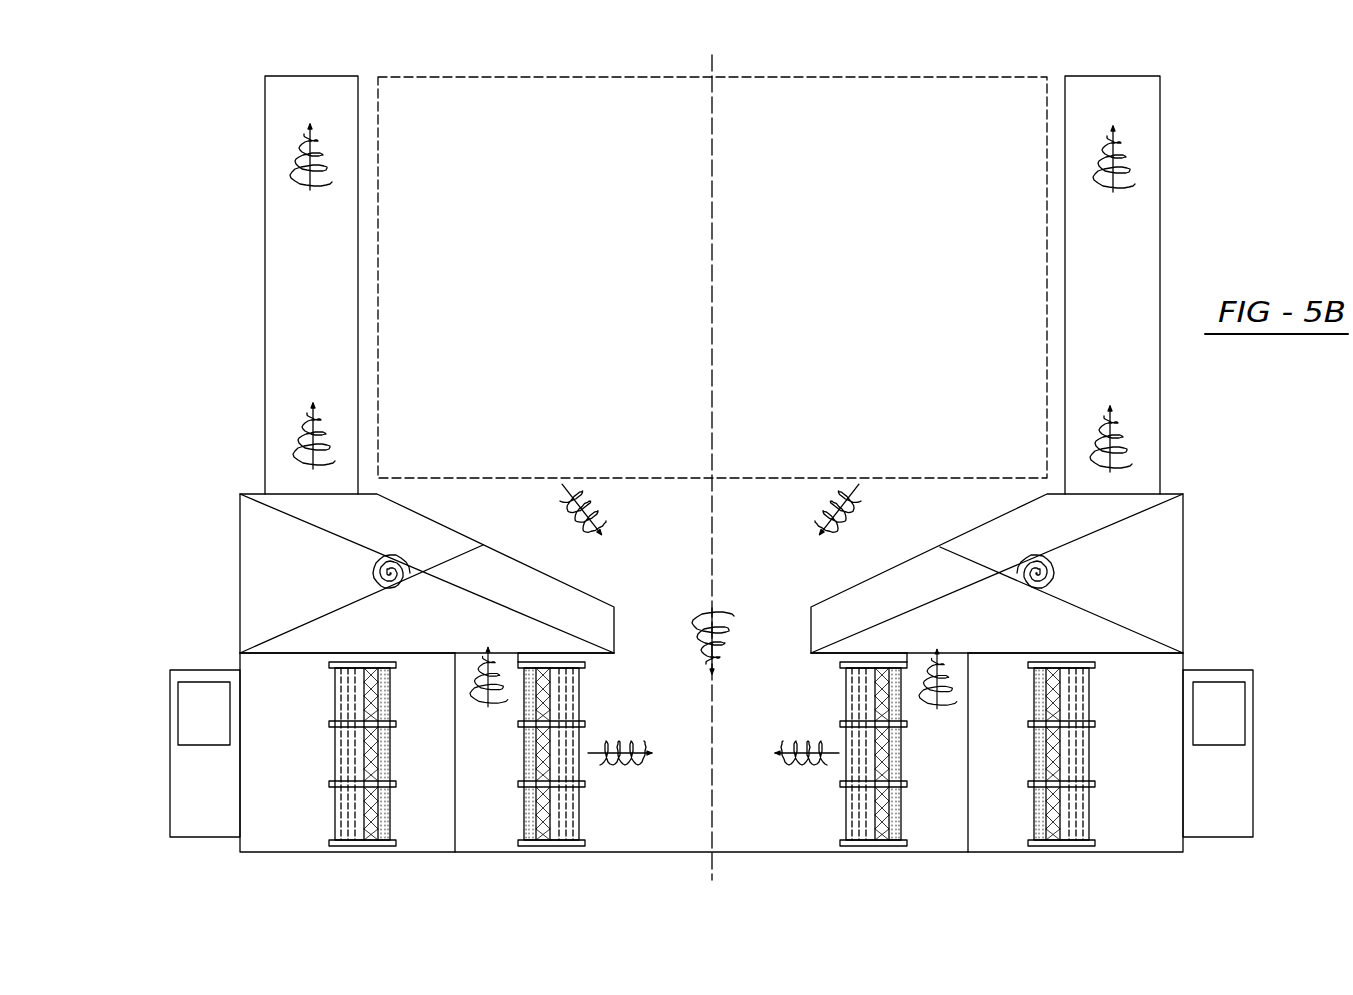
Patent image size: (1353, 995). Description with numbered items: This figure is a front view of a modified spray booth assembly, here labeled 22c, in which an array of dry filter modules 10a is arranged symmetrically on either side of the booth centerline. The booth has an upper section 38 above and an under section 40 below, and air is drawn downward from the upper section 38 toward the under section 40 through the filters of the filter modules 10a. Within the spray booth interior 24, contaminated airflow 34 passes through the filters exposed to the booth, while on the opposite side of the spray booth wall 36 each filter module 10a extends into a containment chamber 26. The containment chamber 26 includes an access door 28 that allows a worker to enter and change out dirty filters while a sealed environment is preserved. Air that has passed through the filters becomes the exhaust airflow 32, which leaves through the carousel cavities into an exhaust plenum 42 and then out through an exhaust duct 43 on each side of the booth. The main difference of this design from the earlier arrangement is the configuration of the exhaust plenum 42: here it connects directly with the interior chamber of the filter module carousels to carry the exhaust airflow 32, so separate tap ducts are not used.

The chamber housing 22c is at (868, 62).
The upper section 38 is at (885, 258).
The under section 40 is at (780, 568).
The spray booth interior 24 is at (788, 702).
The exhaust duct 43 is at (265, 287).
The exhaust plenum 42 is at (240, 580).
The containment chamber 26 is at (1130, 826).
The spray booth wall 36 is at (260, 833).
The access door 28 is at (193, 818).
The dry filter module 10a is at (328, 800).
The exhaust airflow 32 is at (300, 438).
The contaminated airflow 34 is at (560, 500).